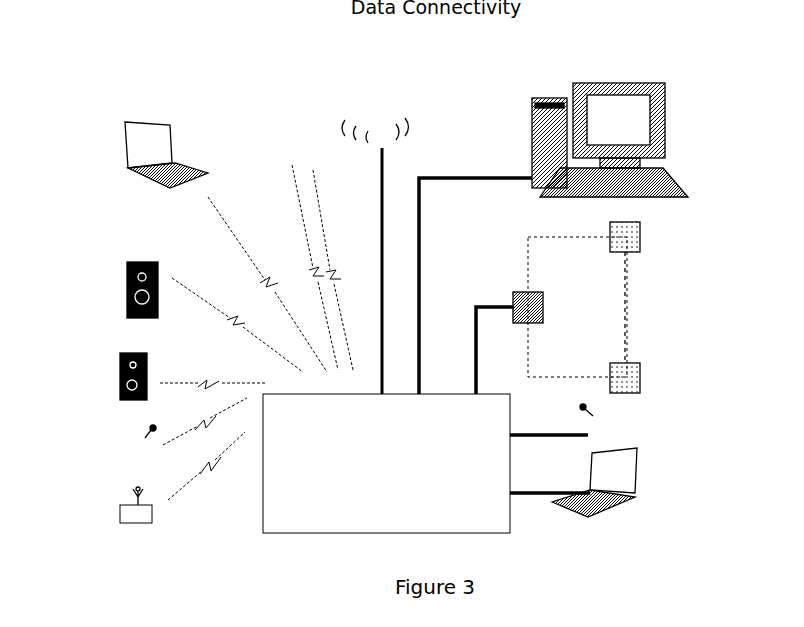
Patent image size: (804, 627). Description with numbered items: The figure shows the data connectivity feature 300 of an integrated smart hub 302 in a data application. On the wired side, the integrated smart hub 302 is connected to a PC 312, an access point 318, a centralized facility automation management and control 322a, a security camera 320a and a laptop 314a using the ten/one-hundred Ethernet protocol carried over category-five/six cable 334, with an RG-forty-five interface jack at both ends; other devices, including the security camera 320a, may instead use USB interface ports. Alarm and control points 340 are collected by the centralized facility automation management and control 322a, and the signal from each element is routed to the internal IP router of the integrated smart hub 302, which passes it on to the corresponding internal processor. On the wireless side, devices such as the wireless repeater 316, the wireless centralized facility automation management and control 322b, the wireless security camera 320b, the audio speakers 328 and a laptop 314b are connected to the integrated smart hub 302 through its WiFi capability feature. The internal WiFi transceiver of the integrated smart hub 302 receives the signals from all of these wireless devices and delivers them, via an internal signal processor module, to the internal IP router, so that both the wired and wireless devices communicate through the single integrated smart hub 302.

The data connectivity feature 300 is at (230, 151).
The integrated smart hub 302 is at (440, 393).
The PC 312 is at (532, 120).
The laptop 314a is at (640, 458).
The laptop 314b is at (128, 172).
The wireless repeater 316 is at (302, 162).
The access point 318 is at (345, 143).
The security camera 320a is at (595, 408).
The wireless security camera 320b is at (145, 456).
The centralized facility automation management and control 322a is at (543, 300).
The wireless centralized facility automation management and control 322b is at (122, 518).
The speakers 328 is at (120, 367).
The CAT 5/6 cable 334 is at (480, 167).
The alarm and control points 340 is at (628, 300).